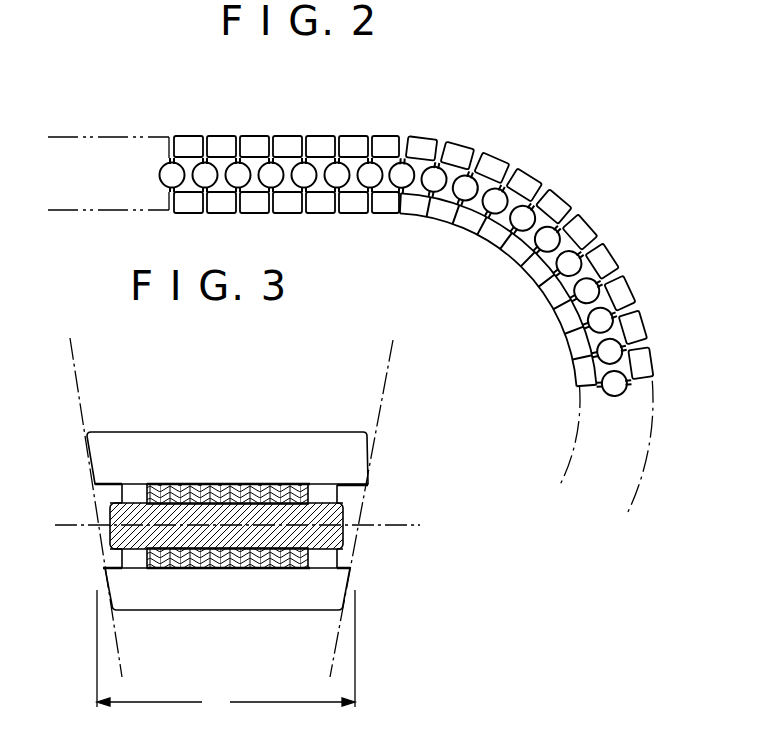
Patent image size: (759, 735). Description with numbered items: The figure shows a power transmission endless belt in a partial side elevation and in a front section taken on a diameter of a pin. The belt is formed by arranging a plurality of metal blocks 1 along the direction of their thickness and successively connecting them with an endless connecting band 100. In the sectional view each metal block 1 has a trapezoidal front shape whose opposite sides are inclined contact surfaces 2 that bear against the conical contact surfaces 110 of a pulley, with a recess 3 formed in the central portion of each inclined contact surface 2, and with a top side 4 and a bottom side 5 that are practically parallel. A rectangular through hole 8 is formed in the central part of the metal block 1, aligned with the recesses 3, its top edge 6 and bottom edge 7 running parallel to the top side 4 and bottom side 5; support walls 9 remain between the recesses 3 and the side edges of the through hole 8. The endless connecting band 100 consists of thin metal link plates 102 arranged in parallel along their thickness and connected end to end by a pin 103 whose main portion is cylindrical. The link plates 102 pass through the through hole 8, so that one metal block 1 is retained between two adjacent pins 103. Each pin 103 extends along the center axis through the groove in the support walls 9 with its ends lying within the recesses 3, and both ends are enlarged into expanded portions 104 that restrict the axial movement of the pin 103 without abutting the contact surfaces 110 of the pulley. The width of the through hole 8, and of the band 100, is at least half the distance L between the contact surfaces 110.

In FIG. 2, the metal block 1 is at (288, 130).
In FIG. 3, the metal block 1 is at (220, 430).
In FIG. 2, the inclined contact surface 2 is at (531, 187).
In FIG. 3, the inclined contact surface 2 is at (88, 453).
In FIG. 2, the recess 3 is at (500, 218).
In FIG. 3, the recess 3 is at (118, 488).
In FIG. 3, the top side 4 is at (155, 432).
In FIG. 3, the bottom side 5 is at (232, 612).
In FIG. 3, the top edge 6 is at (253, 482).
In FIG. 3, the bottom edge 7 is at (247, 561).
In FIG. 3, the rectangular through hole 8 is at (190, 477).
In FIG. 3, the support wall 9 is at (138, 552).
In FIG. 3, the endless connecting band 100 is at (316, 500).
In FIG. 2, the link plate 102 is at (503, 185).
In FIG. 3, the link plate 102 is at (293, 483).
In FIG. 3, the pin 103 is at (317, 537).
In FIG. 2, the expanded portion 104 is at (505, 192).
In FIG. 3, the expanded portion 104 is at (339, 501).
In FIG. 3, the contact surface of pulley 110 is at (385, 371).